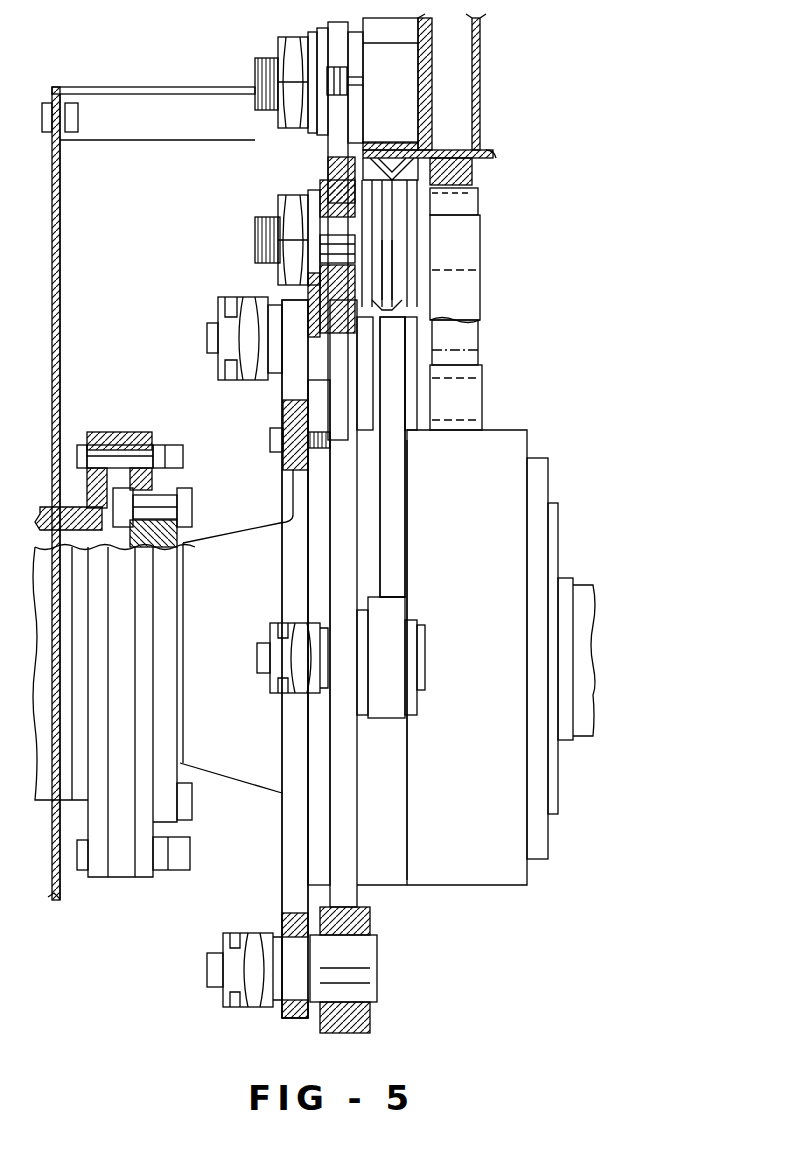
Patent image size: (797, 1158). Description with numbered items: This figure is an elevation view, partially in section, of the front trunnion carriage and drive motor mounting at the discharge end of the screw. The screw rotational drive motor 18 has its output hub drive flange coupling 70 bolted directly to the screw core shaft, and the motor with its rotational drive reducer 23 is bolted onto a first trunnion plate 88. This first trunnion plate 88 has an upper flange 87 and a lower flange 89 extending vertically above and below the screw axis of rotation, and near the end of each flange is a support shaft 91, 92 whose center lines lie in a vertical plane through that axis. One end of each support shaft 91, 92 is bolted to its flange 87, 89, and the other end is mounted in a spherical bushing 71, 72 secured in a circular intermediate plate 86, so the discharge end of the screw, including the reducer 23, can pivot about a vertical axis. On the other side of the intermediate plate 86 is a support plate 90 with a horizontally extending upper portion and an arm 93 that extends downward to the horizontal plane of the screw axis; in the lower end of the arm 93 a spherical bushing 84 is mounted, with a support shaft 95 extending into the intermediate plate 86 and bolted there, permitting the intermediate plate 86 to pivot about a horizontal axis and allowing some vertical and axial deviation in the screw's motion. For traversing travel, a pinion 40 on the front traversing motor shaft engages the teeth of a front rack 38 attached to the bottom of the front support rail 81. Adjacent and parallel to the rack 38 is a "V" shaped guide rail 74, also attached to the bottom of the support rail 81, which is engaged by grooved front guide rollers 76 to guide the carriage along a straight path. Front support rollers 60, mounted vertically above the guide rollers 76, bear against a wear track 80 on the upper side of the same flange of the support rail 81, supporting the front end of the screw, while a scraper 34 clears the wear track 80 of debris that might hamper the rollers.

The screw rotational drive motor 18 is at (591, 652).
The rotational drive reducer 23 is at (255, 792).
The scraper 34 is at (415, 90).
The front rack 38 is at (472, 175).
The pinion 40 is at (476, 262).
The front support rollers 60 is at (365, 28).
The output hub drive flange coupling 70 is at (121, 432).
The spherical bushing 71 is at (325, 50).
The spherical bushing 72 is at (365, 920).
The "V" shaped guide rail 74 is at (348, 172).
The front guide rollers 76 is at (415, 202).
The wear track 80 is at (425, 145).
The front support rail 81 is at (437, 122).
The spherical bushing 84 is at (425, 713).
The intermediate plate 86 is at (347, 780).
The upper flange 87 is at (290, 425).
The first trunnion plate 88 is at (297, 840).
The lower flange 89 is at (282, 868).
The support plate 90 is at (397, 567).
The support shaft 91 is at (320, 366).
The support shaft 92 is at (295, 920).
The support plate arm 93 is at (407, 585).
The support shaft 95 is at (368, 690).